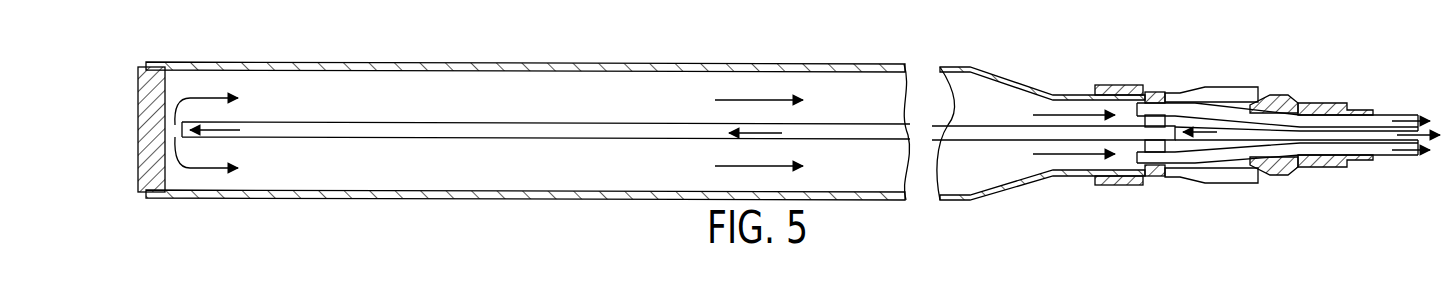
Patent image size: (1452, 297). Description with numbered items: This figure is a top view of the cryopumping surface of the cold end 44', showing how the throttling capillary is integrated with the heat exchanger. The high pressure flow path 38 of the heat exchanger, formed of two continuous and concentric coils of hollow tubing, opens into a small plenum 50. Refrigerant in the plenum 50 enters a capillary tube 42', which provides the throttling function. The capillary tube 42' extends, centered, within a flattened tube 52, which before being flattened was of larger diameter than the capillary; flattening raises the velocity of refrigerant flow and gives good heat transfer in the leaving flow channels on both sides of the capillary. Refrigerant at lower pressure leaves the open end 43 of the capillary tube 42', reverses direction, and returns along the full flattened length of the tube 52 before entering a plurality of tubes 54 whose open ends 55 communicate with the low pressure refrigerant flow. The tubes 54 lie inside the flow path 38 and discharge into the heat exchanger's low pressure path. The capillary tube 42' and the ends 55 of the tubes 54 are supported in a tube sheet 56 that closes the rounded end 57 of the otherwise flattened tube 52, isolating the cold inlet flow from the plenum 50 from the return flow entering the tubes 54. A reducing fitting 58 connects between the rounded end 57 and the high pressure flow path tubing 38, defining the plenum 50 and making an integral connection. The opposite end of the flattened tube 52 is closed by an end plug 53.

The end plug 53 is at (134, 97).
The flattened tube 52 is at (302, 198).
The open end of the capillary tube 43 is at (197, 122).
The capillary tube 42' is at (489, 129).
The open ends of the tubes 55 is at (1133, 100).
The rounded end of the flattened tube 57 is at (1057, 174).
The tube sheet 56 is at (1160, 93).
The reducing fitting 58 is at (1188, 87).
The plenum 50 is at (1262, 101).
The high pressure flow path 38 is at (1364, 102).
The tubes 54 is at (1410, 114).
The cryopump cold end 44' is at (1042, 293).